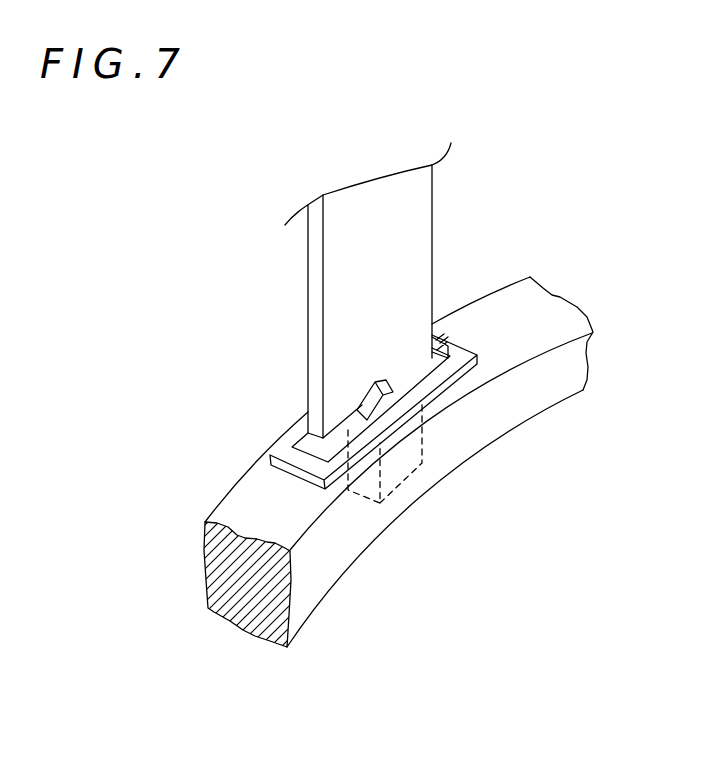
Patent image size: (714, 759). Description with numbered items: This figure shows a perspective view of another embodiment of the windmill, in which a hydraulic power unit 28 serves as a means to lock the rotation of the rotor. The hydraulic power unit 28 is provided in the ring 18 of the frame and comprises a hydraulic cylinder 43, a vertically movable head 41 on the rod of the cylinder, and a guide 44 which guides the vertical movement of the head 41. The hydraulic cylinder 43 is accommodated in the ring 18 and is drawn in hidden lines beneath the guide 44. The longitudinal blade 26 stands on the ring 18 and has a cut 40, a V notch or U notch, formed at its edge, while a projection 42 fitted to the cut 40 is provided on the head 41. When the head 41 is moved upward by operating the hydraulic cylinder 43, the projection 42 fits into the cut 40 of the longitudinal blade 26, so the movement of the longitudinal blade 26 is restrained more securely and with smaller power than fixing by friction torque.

The ring 18 is at (240, 503).
The longitudinal blade 26 is at (313, 255).
The hydraulic power unit 28 is at (355, 423).
The cut 40 is at (374, 382).
The head 41 is at (446, 352).
The projection 42 is at (387, 398).
The hydraulic cylinder 43 is at (423, 462).
The guide 44 is at (302, 468).